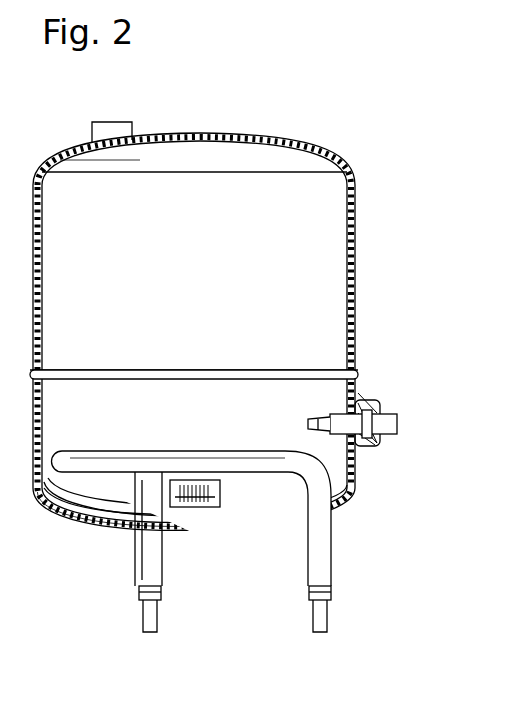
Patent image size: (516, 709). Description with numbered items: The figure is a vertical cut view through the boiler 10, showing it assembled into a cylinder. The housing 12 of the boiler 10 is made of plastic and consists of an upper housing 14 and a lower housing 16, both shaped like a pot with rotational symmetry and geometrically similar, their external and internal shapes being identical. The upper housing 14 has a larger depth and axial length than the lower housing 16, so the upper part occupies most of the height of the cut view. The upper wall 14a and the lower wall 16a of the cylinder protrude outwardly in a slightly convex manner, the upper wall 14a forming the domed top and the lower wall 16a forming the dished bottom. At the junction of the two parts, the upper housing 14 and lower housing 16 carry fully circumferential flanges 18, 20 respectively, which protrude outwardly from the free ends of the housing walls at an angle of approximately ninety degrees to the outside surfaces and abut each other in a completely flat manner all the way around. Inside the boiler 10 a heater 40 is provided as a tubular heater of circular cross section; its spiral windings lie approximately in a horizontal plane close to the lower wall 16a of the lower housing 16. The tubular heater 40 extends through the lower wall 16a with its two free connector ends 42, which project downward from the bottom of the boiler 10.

The boiler 10 is at (335, 134).
The housing 12 is at (355, 210).
The upper housing 14 is at (220, 262).
The upper wall 14a is at (230, 136).
The lower housing 16 is at (212, 422).
The lower wall 16a is at (100, 523).
The flange 18 is at (357, 370).
The flange 20 is at (358, 379).
The heater 40 is at (137, 462).
The connector ends 42 is at (137, 592).